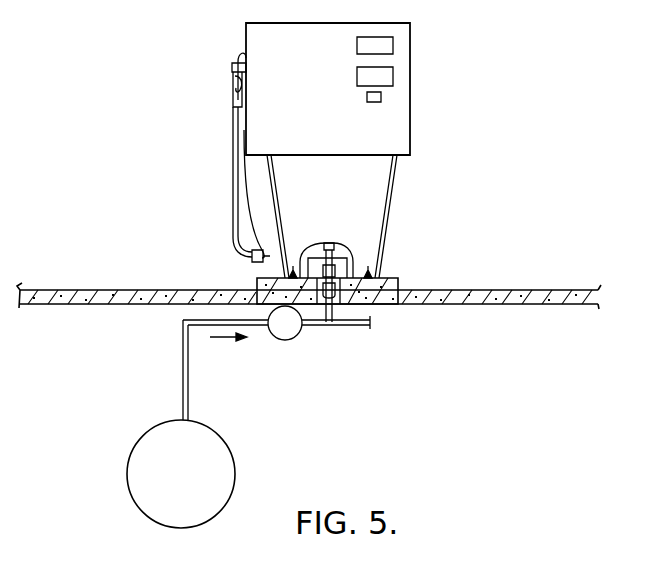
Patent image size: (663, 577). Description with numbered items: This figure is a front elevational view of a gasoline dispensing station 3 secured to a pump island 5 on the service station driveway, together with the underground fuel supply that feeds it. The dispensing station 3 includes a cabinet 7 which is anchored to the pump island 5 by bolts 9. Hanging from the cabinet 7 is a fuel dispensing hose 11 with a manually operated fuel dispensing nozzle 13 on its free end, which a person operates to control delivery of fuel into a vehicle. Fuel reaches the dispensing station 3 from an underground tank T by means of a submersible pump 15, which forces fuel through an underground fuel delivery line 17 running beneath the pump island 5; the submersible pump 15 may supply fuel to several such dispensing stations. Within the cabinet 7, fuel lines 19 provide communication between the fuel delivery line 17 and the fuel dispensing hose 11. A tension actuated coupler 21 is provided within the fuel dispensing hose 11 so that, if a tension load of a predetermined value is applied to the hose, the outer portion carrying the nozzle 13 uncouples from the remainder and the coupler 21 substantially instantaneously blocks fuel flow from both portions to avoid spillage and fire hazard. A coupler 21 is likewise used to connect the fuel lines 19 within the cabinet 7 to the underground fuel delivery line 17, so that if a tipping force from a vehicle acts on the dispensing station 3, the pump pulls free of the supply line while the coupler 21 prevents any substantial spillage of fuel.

The dispensing station 3 is at (437, 122).
The pump island 5 is at (399, 280).
The cabinet 7 is at (372, 262).
The bolts 9 is at (376, 278).
The fuel dispensing hose 11 is at (234, 171).
The fuel dispensing nozzle 13 is at (233, 84).
The submersible pump 15 is at (283, 341).
The fuel delivery line 17 is at (183, 377).
The fuel lines 19 is at (334, 247).
The tension actuated coupler 21 is at (256, 264).
The tank T is at (130, 454).